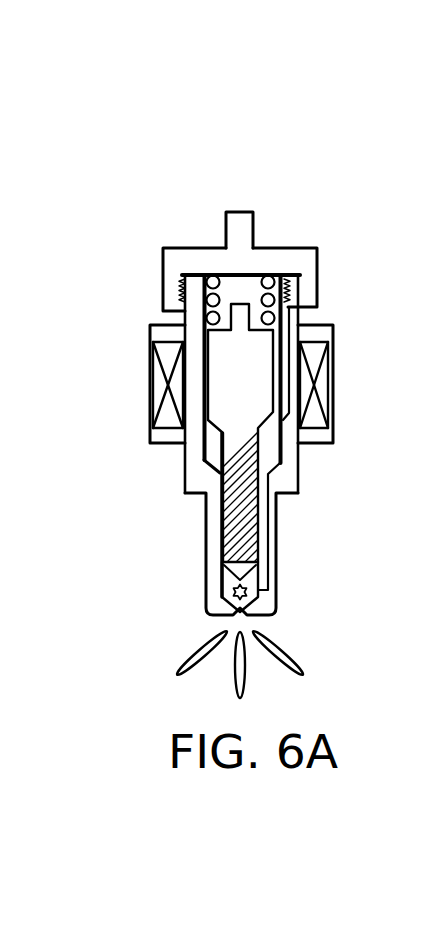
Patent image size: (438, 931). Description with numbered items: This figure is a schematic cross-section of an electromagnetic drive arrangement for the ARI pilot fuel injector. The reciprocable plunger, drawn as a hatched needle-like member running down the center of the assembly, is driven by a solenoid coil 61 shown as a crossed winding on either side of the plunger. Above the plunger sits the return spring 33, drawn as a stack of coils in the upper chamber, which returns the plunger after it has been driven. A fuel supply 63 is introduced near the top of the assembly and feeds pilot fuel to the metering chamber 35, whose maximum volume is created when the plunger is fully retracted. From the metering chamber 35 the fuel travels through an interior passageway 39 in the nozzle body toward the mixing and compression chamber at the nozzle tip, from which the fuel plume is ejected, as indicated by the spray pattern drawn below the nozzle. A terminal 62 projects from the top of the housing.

The connector terminal 62 is at (238, 211).
The return spring 33 is at (288, 298).
The fuel supply 63 is at (298, 303).
The solenoid coil 61 is at (313, 380).
The pilot fuel metering chamber 35 is at (208, 452).
The interior passageway 39 is at (272, 527).